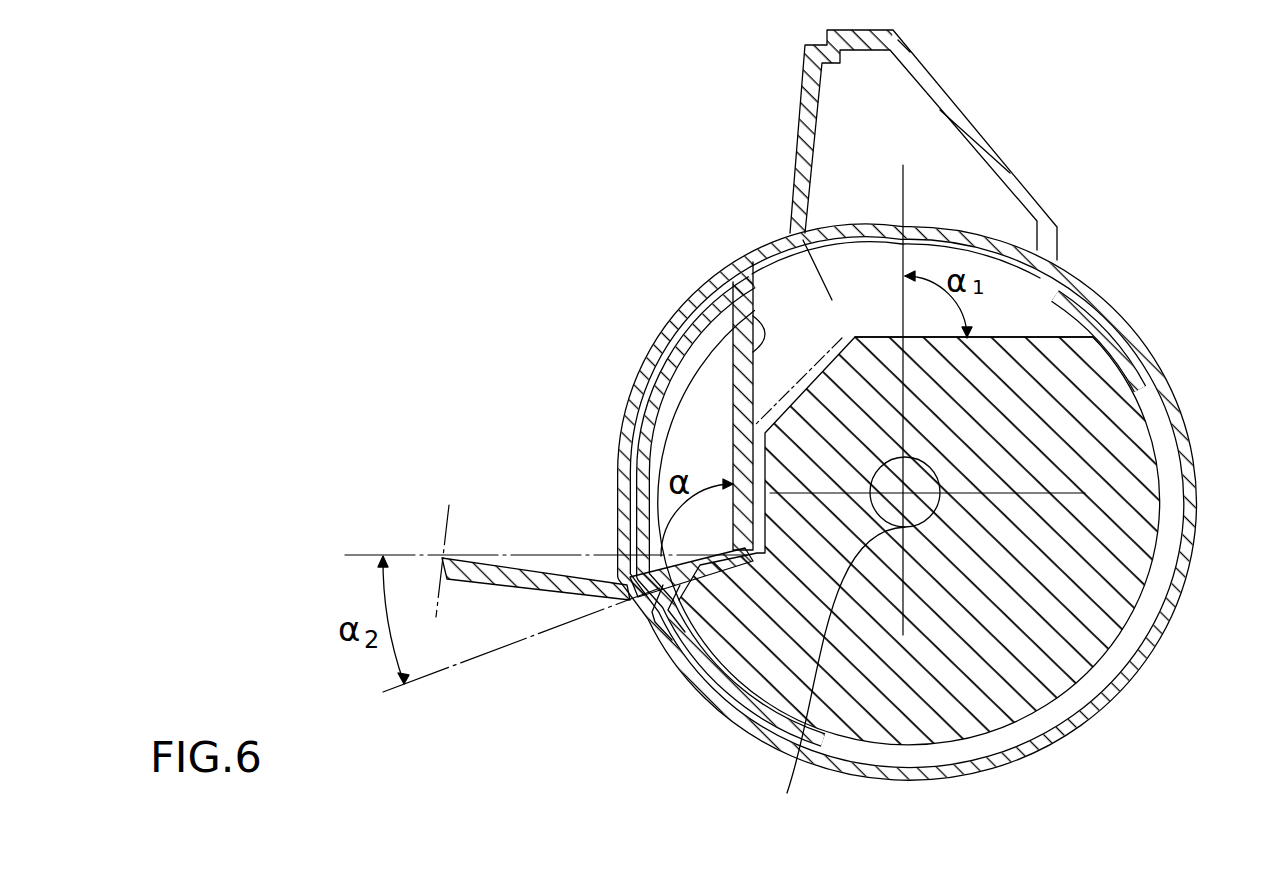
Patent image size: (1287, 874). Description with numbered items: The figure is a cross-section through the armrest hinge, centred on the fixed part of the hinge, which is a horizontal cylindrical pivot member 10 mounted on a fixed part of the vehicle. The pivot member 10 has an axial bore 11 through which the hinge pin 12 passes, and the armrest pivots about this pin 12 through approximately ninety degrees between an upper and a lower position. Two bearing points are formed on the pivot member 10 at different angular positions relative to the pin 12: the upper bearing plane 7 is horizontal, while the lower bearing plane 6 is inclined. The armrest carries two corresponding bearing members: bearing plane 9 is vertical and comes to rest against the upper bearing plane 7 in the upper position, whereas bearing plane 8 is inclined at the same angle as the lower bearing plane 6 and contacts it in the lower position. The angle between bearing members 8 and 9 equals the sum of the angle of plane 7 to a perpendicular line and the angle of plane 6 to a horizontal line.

The lower bearing point 6 is at (730, 582).
The upper bearing point 7 is at (1072, 337).
The bearing member 8 is at (870, 338).
The bearing member 9 is at (695, 293).
The pivot member 10 is at (1093, 553).
The axial bore 11 is at (827, 675).
The hinge pin 12 is at (948, 488).